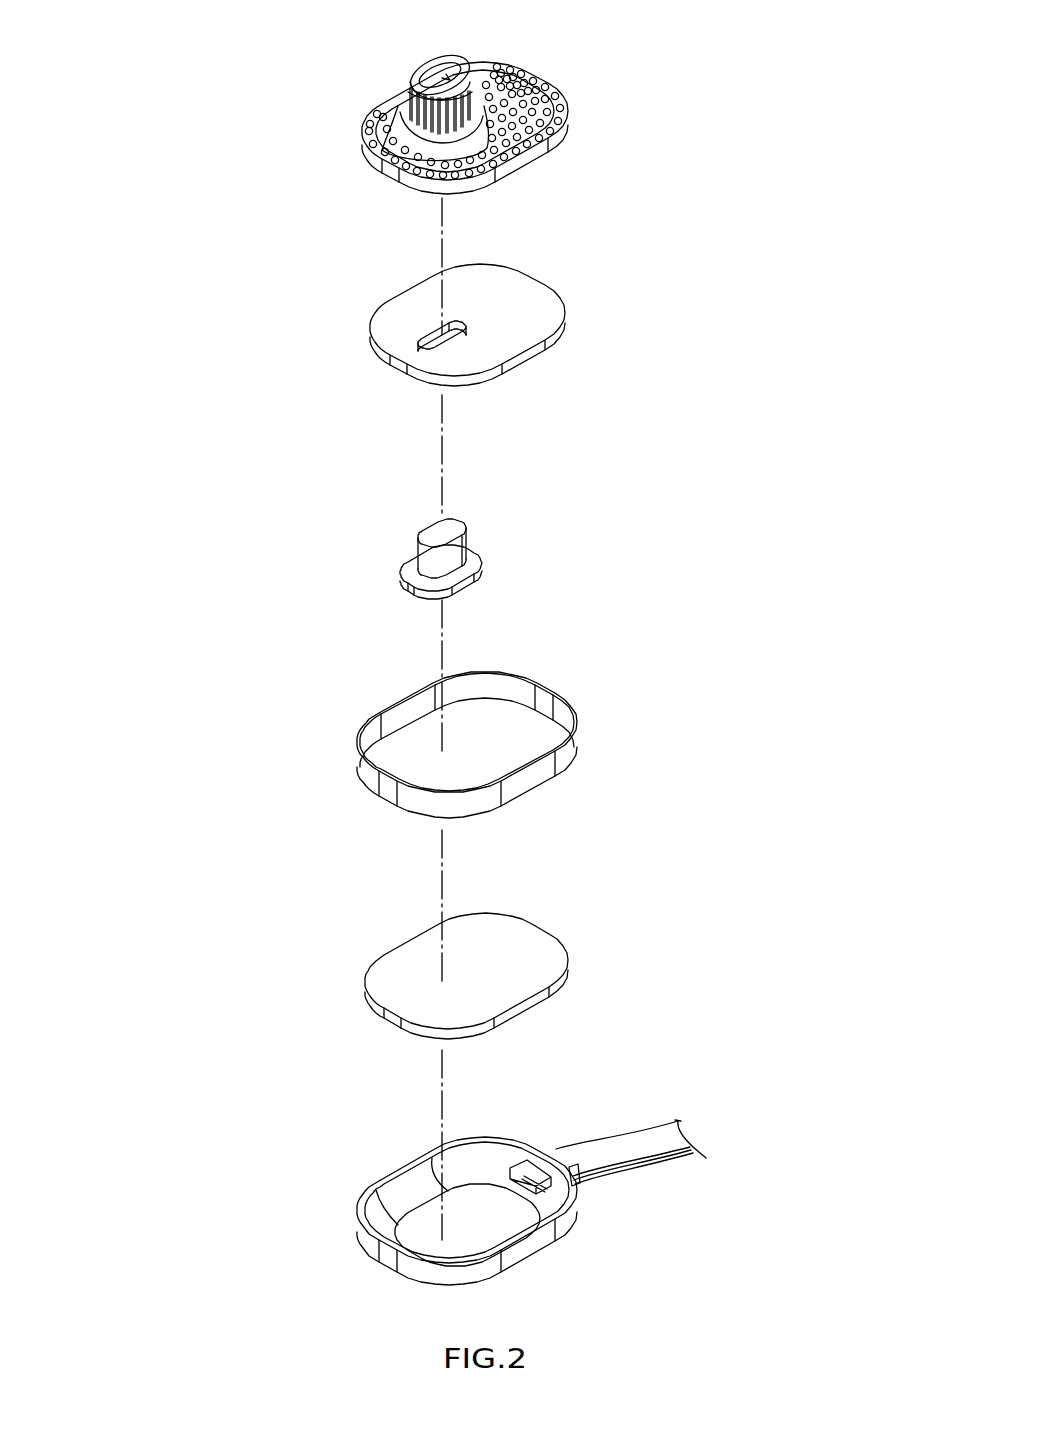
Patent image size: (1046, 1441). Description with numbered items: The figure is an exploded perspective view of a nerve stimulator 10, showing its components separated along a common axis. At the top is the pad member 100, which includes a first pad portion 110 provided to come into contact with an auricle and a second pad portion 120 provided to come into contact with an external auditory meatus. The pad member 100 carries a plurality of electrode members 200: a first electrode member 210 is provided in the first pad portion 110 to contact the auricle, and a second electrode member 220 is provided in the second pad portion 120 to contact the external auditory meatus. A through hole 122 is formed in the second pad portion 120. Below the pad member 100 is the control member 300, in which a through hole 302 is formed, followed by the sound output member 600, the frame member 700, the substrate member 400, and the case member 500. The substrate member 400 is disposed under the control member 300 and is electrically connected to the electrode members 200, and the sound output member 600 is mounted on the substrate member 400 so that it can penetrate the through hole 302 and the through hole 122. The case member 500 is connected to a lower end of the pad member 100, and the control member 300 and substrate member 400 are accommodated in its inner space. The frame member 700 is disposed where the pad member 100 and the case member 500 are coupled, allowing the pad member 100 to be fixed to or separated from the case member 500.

The nerve stimulator 10 is at (302, 52).
The pad member 100 is at (690, 62).
The first pad portion 110 is at (557, 128).
The second pad portion 120 is at (497, 67).
The through hole 122 is at (453, 66).
The electrode members 200 is at (238, 85).
The first electrode member 210 is at (363, 133).
The second electrode member 220 is at (390, 92).
The control member 300 is at (550, 303).
The through hole 302 is at (437, 345).
The substrate member 400 is at (540, 945).
The case member 500 is at (540, 1245).
The sound output member 600 is at (417, 543).
The frame member 700 is at (575, 718).